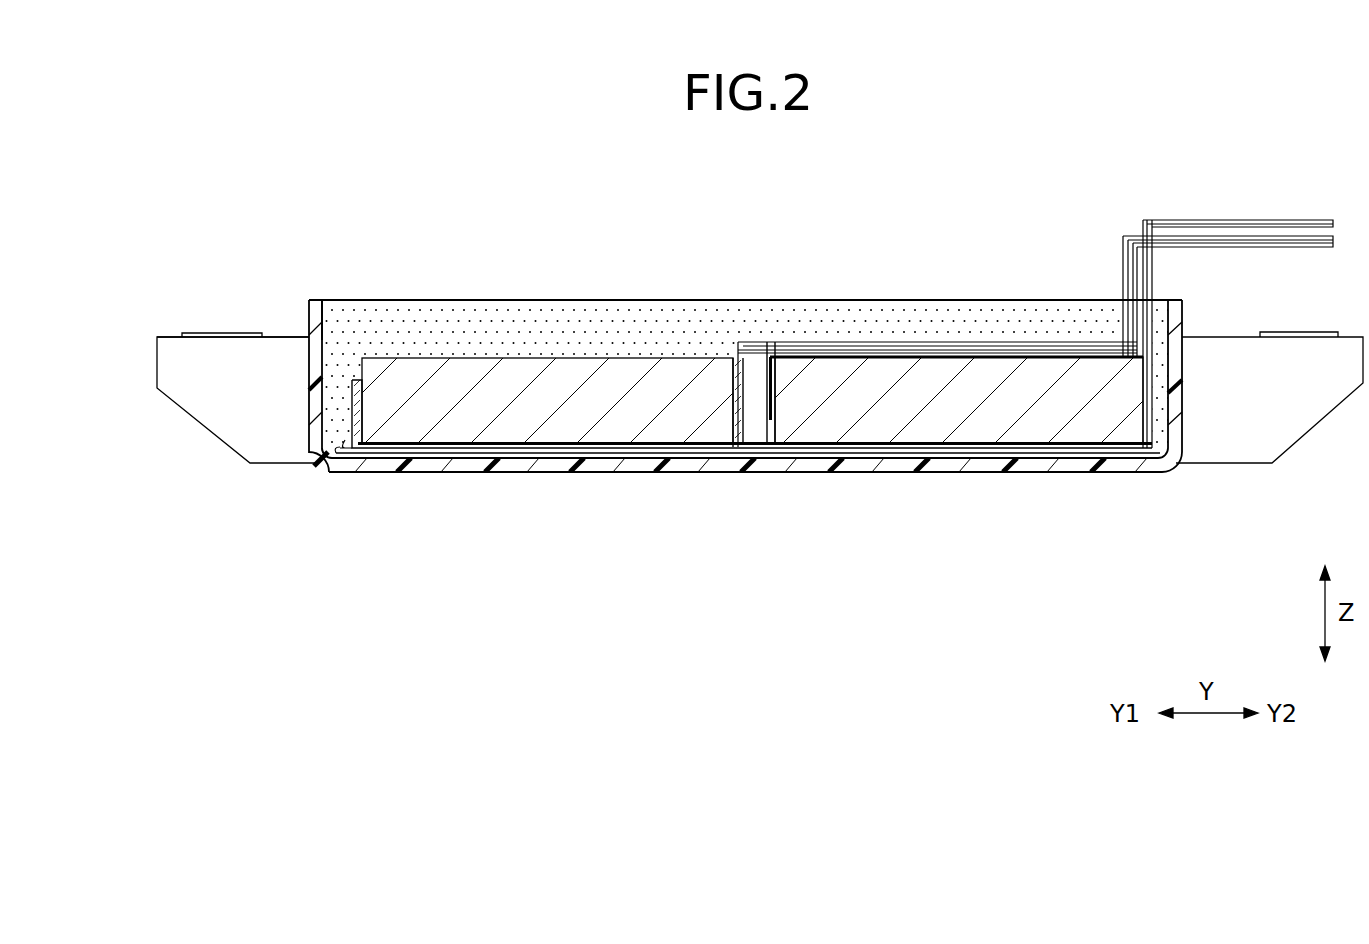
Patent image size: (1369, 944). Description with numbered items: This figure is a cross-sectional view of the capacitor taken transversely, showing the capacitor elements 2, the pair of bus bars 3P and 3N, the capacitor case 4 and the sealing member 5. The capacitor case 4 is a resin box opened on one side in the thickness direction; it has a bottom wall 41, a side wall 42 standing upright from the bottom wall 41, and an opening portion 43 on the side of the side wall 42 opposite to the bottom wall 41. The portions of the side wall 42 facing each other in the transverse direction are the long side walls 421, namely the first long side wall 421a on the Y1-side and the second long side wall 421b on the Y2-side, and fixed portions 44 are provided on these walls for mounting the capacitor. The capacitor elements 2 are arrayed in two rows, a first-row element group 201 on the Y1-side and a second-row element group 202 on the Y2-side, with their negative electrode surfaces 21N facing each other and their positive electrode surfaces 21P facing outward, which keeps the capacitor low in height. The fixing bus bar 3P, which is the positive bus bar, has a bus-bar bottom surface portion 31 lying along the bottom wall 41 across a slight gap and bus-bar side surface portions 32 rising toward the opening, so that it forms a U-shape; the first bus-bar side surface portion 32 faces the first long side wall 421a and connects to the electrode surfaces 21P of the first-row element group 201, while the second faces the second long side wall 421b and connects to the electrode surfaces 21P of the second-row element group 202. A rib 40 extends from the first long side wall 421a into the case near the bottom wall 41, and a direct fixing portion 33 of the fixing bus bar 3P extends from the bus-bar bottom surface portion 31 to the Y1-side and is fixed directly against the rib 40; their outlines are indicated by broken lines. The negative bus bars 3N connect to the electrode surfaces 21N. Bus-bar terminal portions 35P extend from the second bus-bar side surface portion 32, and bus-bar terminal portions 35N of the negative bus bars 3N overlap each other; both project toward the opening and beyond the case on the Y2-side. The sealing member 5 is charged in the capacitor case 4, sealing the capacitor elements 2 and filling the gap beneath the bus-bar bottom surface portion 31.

The capacitor element 2 is at (749, 387).
The first-row element group 201 is at (634, 357).
The second-row element group 202 is at (1030, 383).
The electrode surface on positive side 21P is at (354, 378).
The electrode surface on negative side 21N is at (761, 450).
The fixing bus bar 3P is at (507, 460).
The negative bus bar 3N is at (755, 430).
The bus-bar bottom surface portion 31 is at (1057, 450).
The bus-bar side surface portion 32 is at (353, 385).
The direct fixing portion 33 is at (342, 470).
The bus-bar terminal portion 35P is at (1283, 220).
The bus-bar terminal portion 35N is at (1335, 243).
The capacitor case 4 is at (765, 322).
The rib 40 is at (763, 358).
The bottom wall 41 is at (900, 463).
The side wall 42 is at (314, 351).
The opening portion 43 is at (324, 335).
The fixed portion 44 is at (200, 358).
The long side wall 421 is at (765, 322).
The first long side wall 421a is at (307, 318).
The second long side wall 421b is at (1182, 300).
The sealing member 5 is at (976, 318).